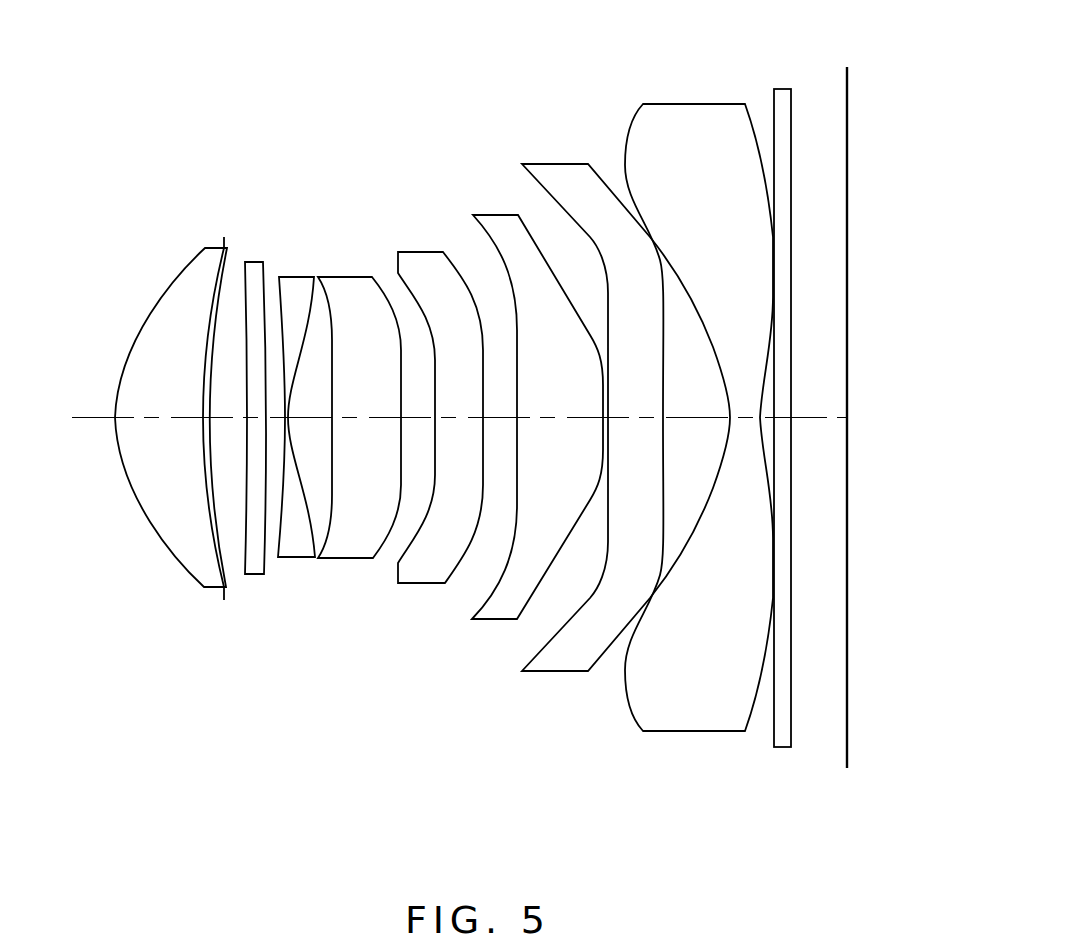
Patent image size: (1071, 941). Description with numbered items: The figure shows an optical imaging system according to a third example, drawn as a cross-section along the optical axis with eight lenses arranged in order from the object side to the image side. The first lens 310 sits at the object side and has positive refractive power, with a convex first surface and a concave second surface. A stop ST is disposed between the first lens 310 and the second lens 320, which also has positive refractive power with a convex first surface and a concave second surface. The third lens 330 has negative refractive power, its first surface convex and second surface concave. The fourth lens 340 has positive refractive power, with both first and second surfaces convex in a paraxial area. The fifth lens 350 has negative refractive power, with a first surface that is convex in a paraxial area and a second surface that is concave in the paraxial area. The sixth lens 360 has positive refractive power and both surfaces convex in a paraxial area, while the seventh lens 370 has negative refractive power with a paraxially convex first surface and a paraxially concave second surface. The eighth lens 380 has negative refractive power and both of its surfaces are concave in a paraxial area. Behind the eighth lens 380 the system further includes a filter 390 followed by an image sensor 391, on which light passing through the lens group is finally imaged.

The first lens 310 is at (183, 270).
The stop ST is at (224, 240).
The second lens 320 is at (253, 267).
The third lens 330 is at (295, 282).
The fourth lens 340 is at (348, 282).
The fifth lens 350 is at (425, 262).
The sixth lens 360 is at (495, 222).
The seventh lens 370 is at (557, 170).
The eighth lens 380 is at (692, 112).
The filter 390 is at (782, 93).
The image sensor 391 is at (848, 67).